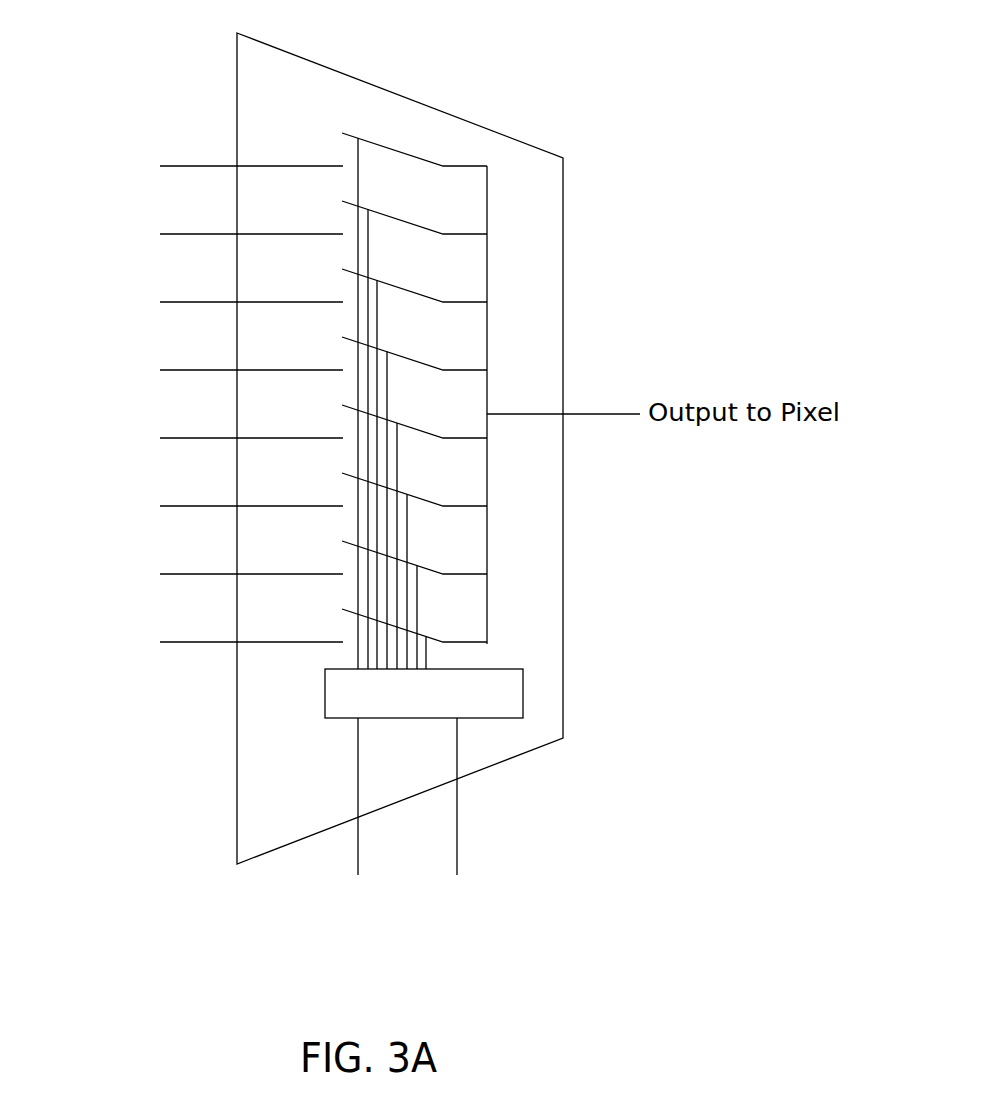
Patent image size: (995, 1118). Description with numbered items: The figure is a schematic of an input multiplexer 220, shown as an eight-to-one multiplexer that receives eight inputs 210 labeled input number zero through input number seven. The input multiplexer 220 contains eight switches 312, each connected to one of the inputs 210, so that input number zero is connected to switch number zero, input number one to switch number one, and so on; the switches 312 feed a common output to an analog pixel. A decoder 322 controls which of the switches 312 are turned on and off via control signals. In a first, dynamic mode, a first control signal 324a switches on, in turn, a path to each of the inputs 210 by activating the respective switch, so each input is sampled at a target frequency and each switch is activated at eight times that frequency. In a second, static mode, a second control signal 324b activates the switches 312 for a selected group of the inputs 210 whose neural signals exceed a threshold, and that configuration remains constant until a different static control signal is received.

The inputs 210 is at (107, 77).
The input multiplexer 220 is at (535, 86).
The switches 312 is at (397, 139).
The decoder 322 is at (523, 698).
The first control signal 324a is at (304, 828).
The second control signal 324b is at (509, 828).